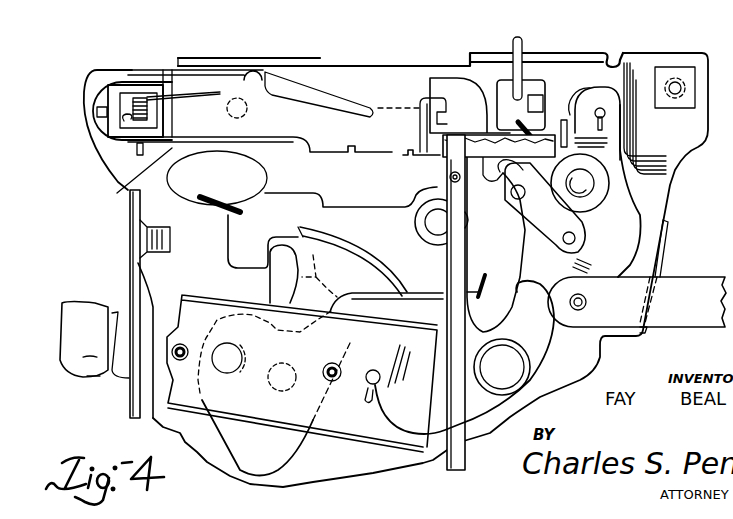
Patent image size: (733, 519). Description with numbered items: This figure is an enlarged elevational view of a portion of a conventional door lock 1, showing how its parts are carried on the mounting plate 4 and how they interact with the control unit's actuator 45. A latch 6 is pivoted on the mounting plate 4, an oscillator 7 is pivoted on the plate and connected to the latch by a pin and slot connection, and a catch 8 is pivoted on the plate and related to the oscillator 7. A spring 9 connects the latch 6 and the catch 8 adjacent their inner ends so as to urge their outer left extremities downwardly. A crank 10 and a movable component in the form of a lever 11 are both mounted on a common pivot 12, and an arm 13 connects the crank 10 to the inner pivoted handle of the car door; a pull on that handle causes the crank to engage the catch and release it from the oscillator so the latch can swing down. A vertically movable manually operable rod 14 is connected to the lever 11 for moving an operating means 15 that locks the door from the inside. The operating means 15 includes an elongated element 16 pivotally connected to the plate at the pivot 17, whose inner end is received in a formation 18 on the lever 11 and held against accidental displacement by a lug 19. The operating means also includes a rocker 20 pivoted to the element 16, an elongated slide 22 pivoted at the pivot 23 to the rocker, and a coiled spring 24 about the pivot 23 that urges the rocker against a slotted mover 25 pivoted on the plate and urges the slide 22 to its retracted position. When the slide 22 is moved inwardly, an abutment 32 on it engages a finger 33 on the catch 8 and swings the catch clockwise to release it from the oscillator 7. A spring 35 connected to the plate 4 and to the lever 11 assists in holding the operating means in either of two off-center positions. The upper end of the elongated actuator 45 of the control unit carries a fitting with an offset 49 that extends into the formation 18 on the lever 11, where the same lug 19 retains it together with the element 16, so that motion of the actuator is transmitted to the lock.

The door lock 1 is at (97, 59).
The mounting plate 4 is at (95, 148).
The latch 6 is at (77, 313).
The oscillator 7 is at (283, 448).
The catch 8 is at (352, 223).
The spring 9 is at (548, 345).
The crank 10 is at (625, 225).
The lever 11 is at (613, 133).
The pivot 12 is at (594, 185).
The arm 13 is at (690, 287).
The rod 14 is at (512, 50).
The operating means 15 is at (263, 53).
The elongated element 16 is at (123, 185).
The pivot 17 is at (252, 107).
The formation 18 is at (515, 210).
The lug 19 is at (565, 120).
The rocker 20 is at (120, 123).
The slide 22 is at (260, 123).
The pivot 23 is at (120, 163).
The coiled spring 24 is at (130, 102).
The slotted mover 25 is at (100, 92).
The abutment 32 is at (420, 100).
The finger 33 is at (427, 90).
The spring 35 is at (570, 105).
The actuator 45 is at (450, 468).
The offset 49 is at (477, 148).